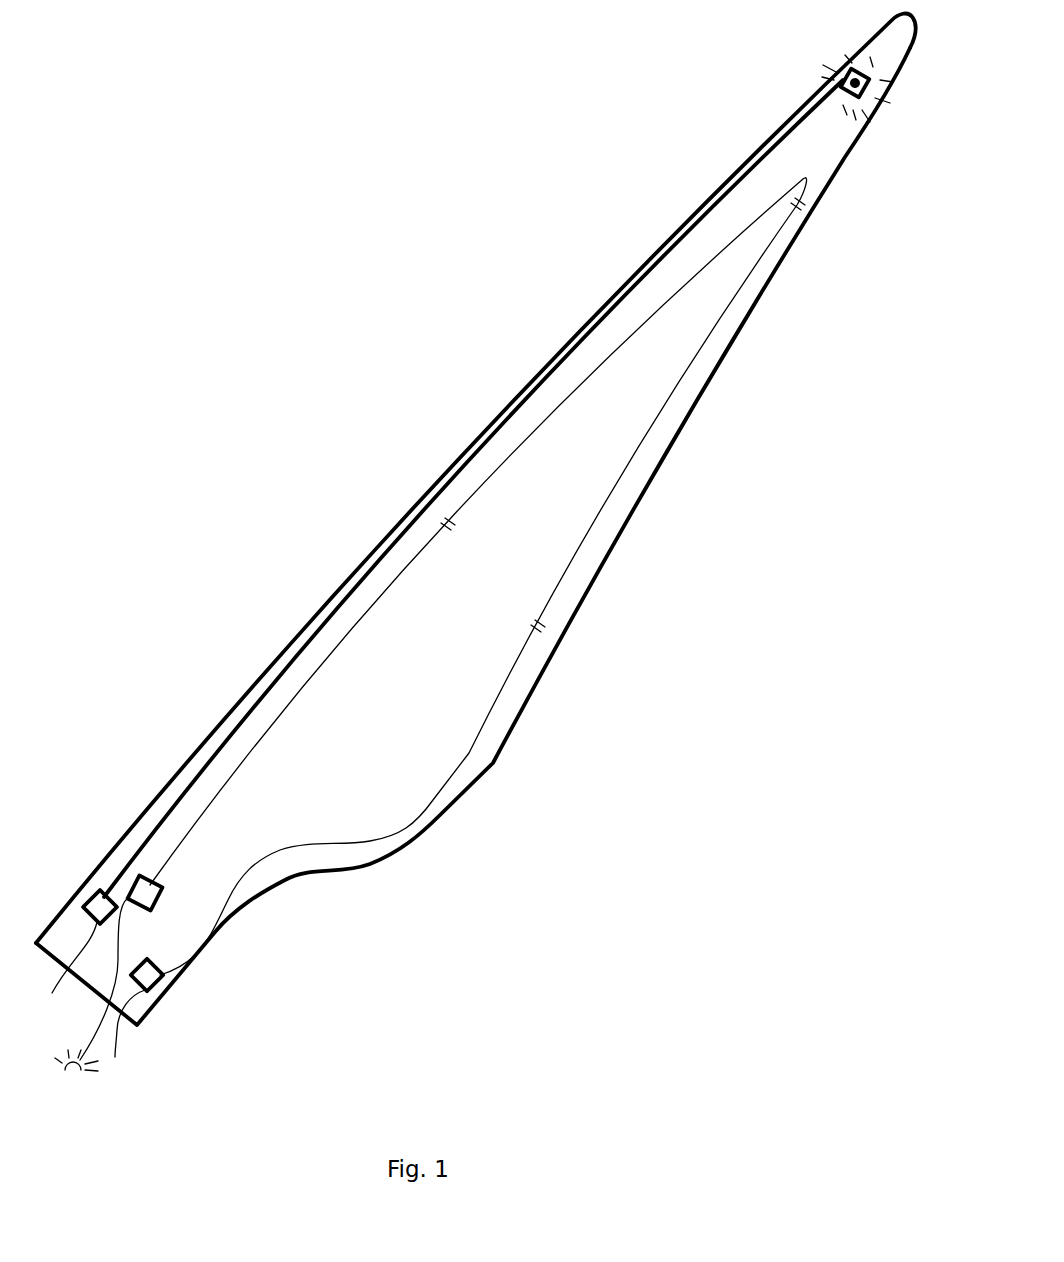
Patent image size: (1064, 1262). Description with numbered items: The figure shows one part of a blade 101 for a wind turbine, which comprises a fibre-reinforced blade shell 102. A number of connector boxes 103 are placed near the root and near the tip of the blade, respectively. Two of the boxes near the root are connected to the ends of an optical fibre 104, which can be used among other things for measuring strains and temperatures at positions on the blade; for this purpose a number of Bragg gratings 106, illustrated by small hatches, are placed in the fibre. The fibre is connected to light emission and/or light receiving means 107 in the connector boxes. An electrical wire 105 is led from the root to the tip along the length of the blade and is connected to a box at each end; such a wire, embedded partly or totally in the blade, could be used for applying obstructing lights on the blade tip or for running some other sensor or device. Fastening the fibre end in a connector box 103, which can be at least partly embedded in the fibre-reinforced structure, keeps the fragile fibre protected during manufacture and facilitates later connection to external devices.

The blade 101 is at (238, 711).
The fibre-reinforced blade shell 102 is at (221, 736).
The connector boxes 103 is at (838, 78).
The optical fibre 104 is at (467, 753).
The electrical wire 105 is at (623, 300).
The Bragg gratings 106 is at (797, 205).
The light emission and/or light receiving means 107 is at (90, 1075).